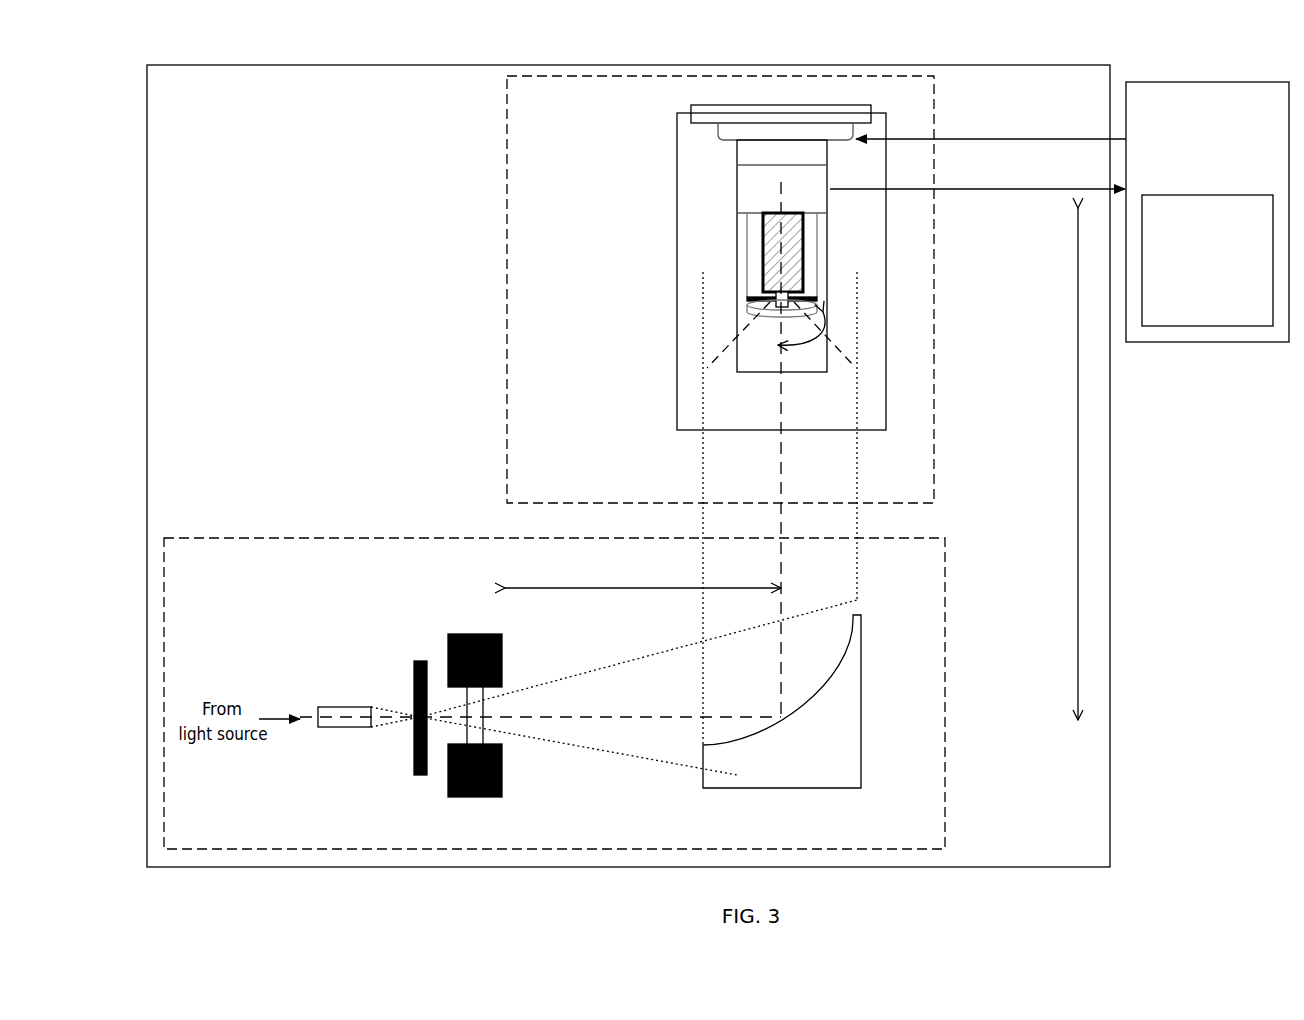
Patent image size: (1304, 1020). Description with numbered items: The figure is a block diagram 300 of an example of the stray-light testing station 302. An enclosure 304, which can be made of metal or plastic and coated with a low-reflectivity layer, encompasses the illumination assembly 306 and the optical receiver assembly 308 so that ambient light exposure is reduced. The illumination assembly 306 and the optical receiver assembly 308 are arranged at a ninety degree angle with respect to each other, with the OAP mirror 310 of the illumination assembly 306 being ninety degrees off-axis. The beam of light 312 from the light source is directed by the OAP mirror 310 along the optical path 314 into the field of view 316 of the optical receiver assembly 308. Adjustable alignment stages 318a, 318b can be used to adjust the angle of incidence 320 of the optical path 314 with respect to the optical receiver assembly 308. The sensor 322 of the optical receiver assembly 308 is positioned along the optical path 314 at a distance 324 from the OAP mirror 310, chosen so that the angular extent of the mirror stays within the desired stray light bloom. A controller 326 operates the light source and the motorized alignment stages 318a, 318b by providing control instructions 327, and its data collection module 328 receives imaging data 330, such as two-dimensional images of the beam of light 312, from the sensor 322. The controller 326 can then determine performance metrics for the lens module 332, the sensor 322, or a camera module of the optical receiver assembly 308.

The block diagram 300 is at (192, 47).
The stray-light testing station 302 is at (980, 65).
The enclosure 304 is at (215, 128).
The illumination assembly 306 is at (202, 568).
The optical receiver assembly 308 is at (543, 495).
The OAP mirror 310 is at (843, 730).
The beam of light 312 is at (855, 522).
The optical path 314 is at (785, 447).
The field of view 316 is at (735, 338).
The adjustable alignment stage 318a is at (765, 137).
The adjustable alignment stage 318b is at (885, 220).
The angle of incidence 320 is at (825, 337).
The sensor 322 is at (737, 189).
The distance 324 is at (1078, 487).
The controller 326 is at (1263, 111).
The control instructions 327 is at (991, 139).
The data collection module 328 is at (1194, 308).
The imaging data 330 is at (977, 188).
The lens module 332 is at (777, 253).